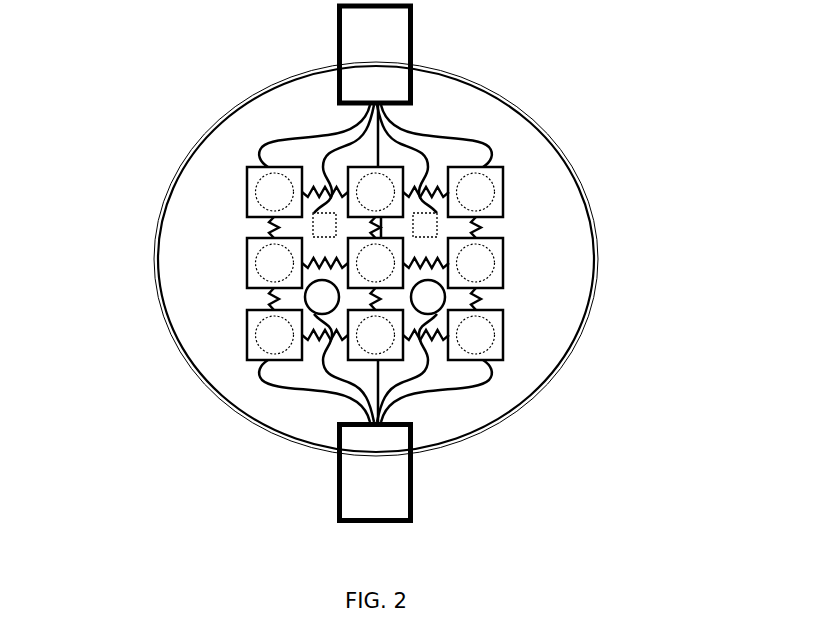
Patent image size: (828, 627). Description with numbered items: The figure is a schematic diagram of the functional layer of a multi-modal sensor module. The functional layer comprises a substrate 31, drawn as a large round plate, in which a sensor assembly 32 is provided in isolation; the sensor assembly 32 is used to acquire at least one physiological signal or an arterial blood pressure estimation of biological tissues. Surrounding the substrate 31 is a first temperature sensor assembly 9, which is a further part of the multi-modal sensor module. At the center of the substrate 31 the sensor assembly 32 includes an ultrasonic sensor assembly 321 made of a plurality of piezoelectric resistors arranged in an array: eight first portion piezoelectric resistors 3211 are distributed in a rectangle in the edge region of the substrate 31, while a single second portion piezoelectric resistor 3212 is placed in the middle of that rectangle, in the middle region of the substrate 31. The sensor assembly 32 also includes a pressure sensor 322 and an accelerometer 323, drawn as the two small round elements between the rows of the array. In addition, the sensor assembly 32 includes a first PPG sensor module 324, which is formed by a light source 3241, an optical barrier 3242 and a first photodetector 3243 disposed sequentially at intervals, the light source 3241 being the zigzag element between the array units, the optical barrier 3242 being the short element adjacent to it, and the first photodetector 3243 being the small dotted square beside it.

The first temperature sensor assembly 9 is at (516, 104).
The substrate 31 is at (450, 90).
The sensor assembly 32 is at (85, 247).
The ultrasonic sensor assembly 321 is at (366, 324).
The first portion piezoelectric resistors 3211 is at (265, 190).
The second portion piezoelectric resistor 3212 is at (397, 281).
The pressure sensor 322 is at (322, 297).
The accelerometer 323 is at (427, 297).
The first PPG sensor module 324 is at (395, 256).
The light source 3241 is at (372, 228).
The optical barrier 3242 is at (384, 229).
The first photodetector 3243 is at (438, 227).